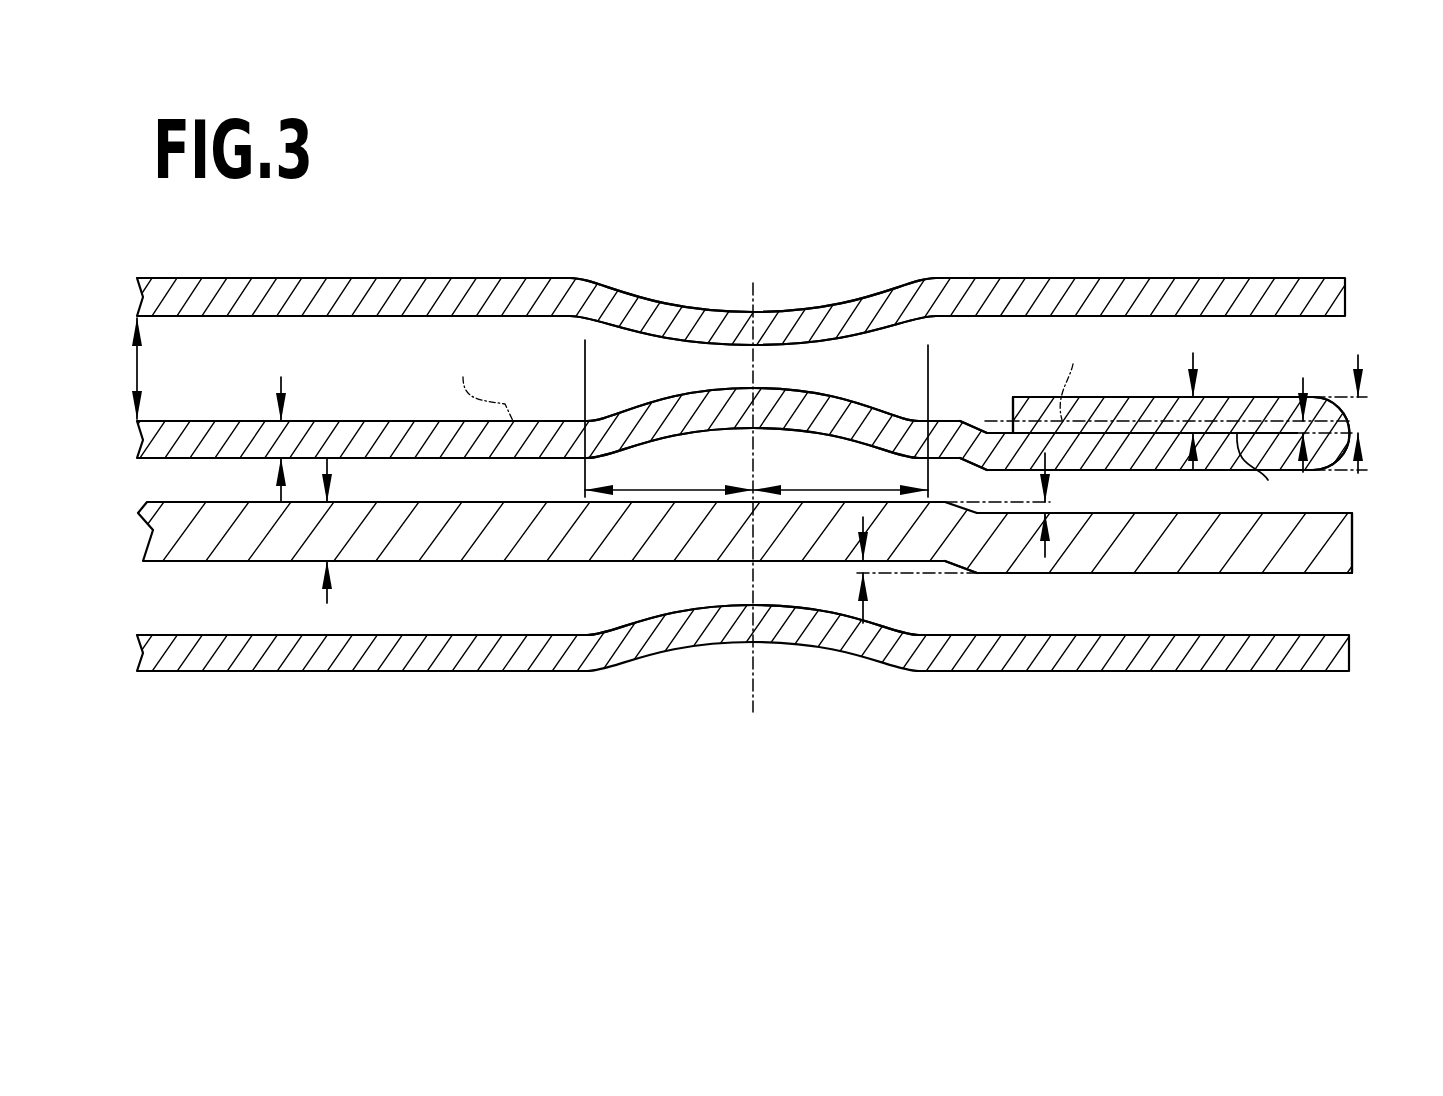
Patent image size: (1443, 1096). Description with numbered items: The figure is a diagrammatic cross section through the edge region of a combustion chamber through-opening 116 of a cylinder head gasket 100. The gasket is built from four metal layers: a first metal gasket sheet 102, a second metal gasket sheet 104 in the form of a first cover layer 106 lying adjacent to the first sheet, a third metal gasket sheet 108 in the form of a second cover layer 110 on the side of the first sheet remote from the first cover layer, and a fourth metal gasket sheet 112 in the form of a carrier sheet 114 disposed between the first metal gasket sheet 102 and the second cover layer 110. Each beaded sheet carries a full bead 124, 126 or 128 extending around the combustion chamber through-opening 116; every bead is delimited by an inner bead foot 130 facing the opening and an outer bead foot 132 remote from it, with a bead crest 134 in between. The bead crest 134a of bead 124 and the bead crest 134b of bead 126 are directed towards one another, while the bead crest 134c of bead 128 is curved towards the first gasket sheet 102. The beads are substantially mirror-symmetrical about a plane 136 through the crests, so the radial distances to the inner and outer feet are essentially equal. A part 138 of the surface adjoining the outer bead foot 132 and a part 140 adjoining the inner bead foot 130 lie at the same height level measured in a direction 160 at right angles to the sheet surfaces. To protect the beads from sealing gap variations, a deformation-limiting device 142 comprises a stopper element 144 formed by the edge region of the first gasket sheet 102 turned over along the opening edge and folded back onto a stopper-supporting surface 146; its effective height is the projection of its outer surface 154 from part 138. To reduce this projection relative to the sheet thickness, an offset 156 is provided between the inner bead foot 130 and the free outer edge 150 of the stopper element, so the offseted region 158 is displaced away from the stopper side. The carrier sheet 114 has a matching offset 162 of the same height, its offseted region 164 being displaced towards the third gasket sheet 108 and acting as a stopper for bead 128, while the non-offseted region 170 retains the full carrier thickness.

The cylinder head gasket 100 is at (746, 475).
The first metal gasket sheet 102 is at (745, 467).
The second metal gasket sheet 104 is at (741, 282).
The first cover layer 106 is at (252, 292).
The third metal gasket sheet 108 is at (227, 660).
The second cover layer 110 is at (749, 677).
The fourth metal gasket sheet 112 is at (755, 613).
The carrier sheet 114 is at (212, 545).
The combustion chamber through-opening 116 is at (762, 613).
The bead 124 is at (832, 397).
The bead 126 is at (686, 317).
The bead 128 is at (836, 637).
The inner bead foot 130 is at (950, 345).
The outer bead foot 132 is at (585, 345).
The bead crest 134 is at (782, 471).
The bead crest 134a is at (746, 375).
The bead crest 134b is at (764, 357).
The bead crest 134c is at (777, 597).
The plane 136 is at (752, 692).
The part of the surface of the gasket sheet 138 is at (563, 422).
The part of the surface of the gasket sheet 140 is at (940, 420).
The deformation-limiting device 142 is at (1164, 386).
The stopper element 144 is at (1230, 410).
The stopper-supporting surface 146 is at (1112, 433).
The free outer edge 150 is at (1013, 401).
The outer surface 154 is at (1218, 396).
The offset 156 is at (962, 458).
The offseted region 158 is at (1113, 450).
The direction 160 is at (140, 363).
The offset 162 is at (947, 573).
The offseted region 164 is at (1218, 552).
The non-offseted region 170 is at (538, 540).